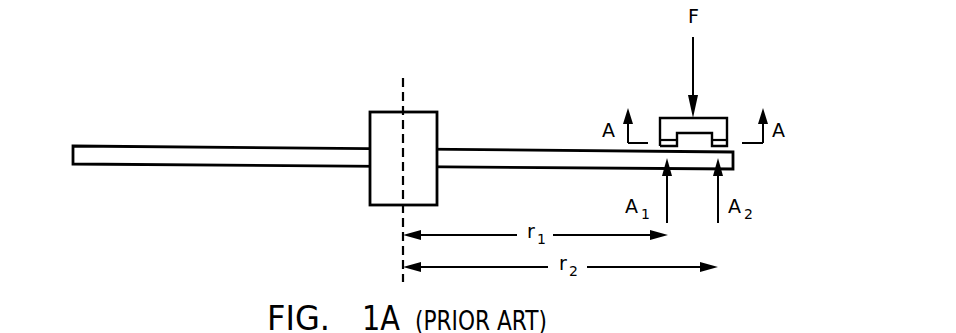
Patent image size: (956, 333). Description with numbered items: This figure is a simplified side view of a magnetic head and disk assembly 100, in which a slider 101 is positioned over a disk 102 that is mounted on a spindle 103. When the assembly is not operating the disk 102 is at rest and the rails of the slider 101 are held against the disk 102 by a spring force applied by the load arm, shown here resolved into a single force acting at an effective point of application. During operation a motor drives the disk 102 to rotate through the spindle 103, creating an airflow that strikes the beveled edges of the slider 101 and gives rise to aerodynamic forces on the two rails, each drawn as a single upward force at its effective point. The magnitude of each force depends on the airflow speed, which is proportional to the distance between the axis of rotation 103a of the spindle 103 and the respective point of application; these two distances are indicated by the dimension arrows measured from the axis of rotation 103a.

The magnetic head and disk assembly 100 is at (343, 119).
The slider 101 is at (728, 122).
The disk 102 is at (737, 168).
The spindle 103 is at (437, 128).
The axis of rotation 103a is at (404, 88).